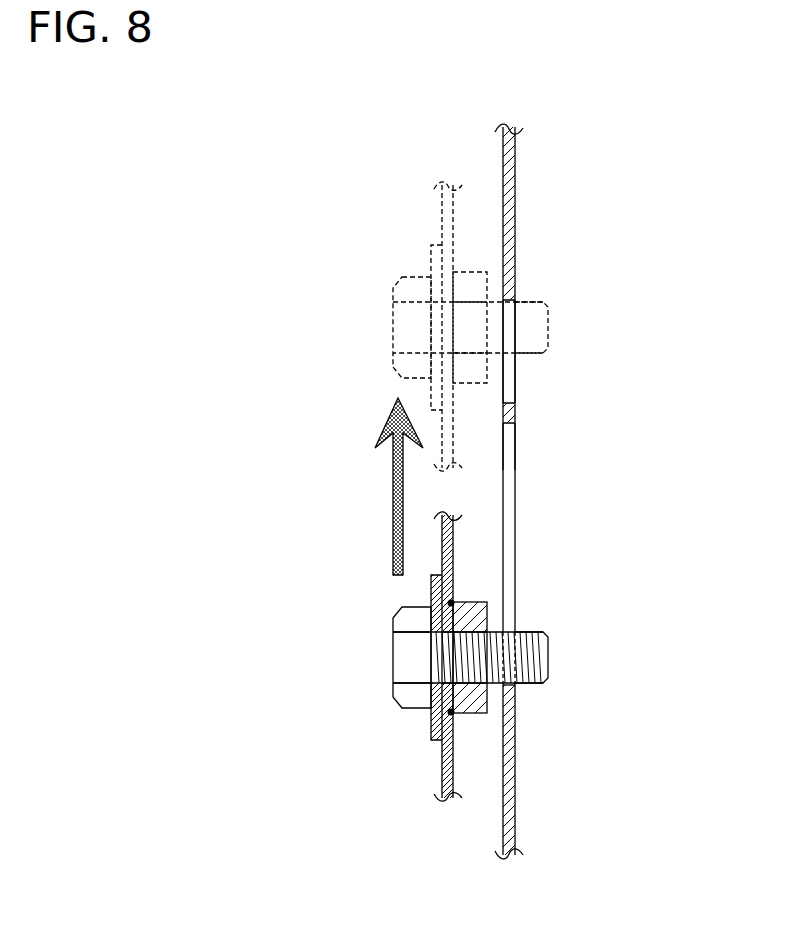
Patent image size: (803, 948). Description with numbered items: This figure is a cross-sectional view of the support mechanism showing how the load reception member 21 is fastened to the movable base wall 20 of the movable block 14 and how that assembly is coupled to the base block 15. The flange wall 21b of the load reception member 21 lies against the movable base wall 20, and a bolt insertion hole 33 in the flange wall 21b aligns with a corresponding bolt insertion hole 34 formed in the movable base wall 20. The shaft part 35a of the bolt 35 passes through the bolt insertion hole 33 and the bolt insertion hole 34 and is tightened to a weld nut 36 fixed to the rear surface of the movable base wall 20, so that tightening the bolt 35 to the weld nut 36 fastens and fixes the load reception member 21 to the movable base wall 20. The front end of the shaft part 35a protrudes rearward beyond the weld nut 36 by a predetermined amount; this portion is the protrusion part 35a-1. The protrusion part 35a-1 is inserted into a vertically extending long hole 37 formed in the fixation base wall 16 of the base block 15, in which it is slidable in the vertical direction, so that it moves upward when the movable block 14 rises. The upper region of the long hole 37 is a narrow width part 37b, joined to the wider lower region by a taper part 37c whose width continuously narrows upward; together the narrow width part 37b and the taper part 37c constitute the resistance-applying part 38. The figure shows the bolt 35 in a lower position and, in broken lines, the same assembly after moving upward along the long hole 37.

The movable block 14 is at (402, 501).
The base block 15 is at (581, 491).
The fixation base wall 16 is at (517, 814).
The movable base wall 20 is at (441, 210).
The load reception member 21 is at (362, 512).
The flange wall 21b is at (431, 264).
The bolt insertion hole 33 is at (428, 668).
The bolt insertion hole 34 is at (448, 675).
The bolt 35 is at (393, 322).
The shaft part 35a is at (469, 299).
The protrusion part 35a-1 is at (532, 353).
The weld nut 36 is at (466, 271).
The long hole 37 is at (511, 316).
The narrow width part 37b is at (510, 373).
The taper part 37c is at (510, 413).
The resistance-applying part 38 is at (585, 421).